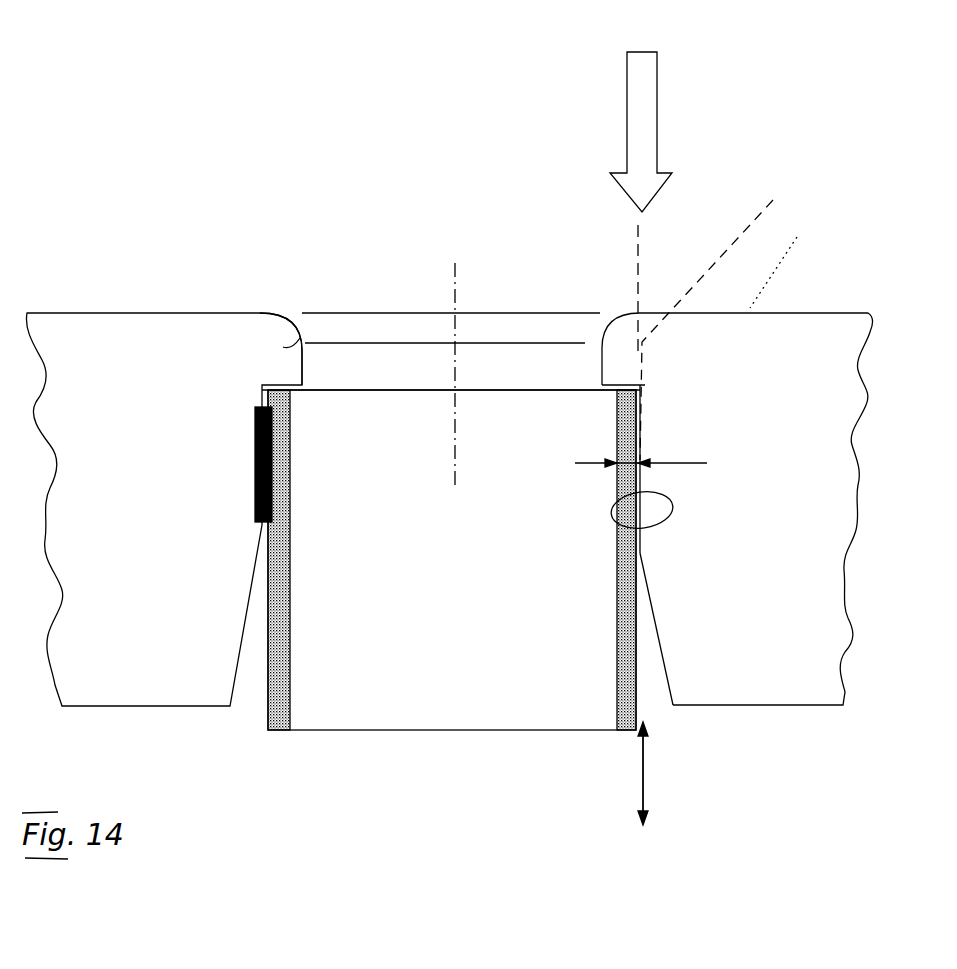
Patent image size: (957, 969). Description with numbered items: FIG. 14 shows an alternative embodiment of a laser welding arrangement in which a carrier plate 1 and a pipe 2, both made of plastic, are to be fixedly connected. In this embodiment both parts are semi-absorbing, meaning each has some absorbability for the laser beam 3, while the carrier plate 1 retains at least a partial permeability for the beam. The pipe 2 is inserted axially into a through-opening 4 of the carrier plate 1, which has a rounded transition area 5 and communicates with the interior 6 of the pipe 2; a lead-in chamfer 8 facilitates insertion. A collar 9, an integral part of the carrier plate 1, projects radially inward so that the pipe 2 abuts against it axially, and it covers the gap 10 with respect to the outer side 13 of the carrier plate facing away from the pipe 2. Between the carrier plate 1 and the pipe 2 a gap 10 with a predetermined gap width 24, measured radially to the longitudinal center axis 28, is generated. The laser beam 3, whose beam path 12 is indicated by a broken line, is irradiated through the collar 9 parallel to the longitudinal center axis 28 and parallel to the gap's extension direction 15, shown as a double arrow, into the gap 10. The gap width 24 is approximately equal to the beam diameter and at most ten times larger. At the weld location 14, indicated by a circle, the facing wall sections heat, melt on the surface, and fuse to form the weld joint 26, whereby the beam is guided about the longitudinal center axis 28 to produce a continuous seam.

The carrier plate 1 is at (768, 496).
The pipe 2 is at (600, 702).
The laser beam 3 is at (657, 120).
The through-opening 4 is at (303, 375).
The rounded transition area 5 is at (613, 325).
The interior 6 is at (470, 578).
The lead-in chamfer 8 is at (678, 674).
The collar 9 is at (302, 380).
The gap 10 is at (645, 440).
The beam path 12 is at (725, 308).
The outer side 13 is at (789, 264).
The weld location 14 is at (665, 528).
The direction of movement 15 is at (645, 775).
The gap width 24 is at (683, 463).
The weld joint 26 is at (255, 462).
The longitudinal center axis 28 is at (455, 270).